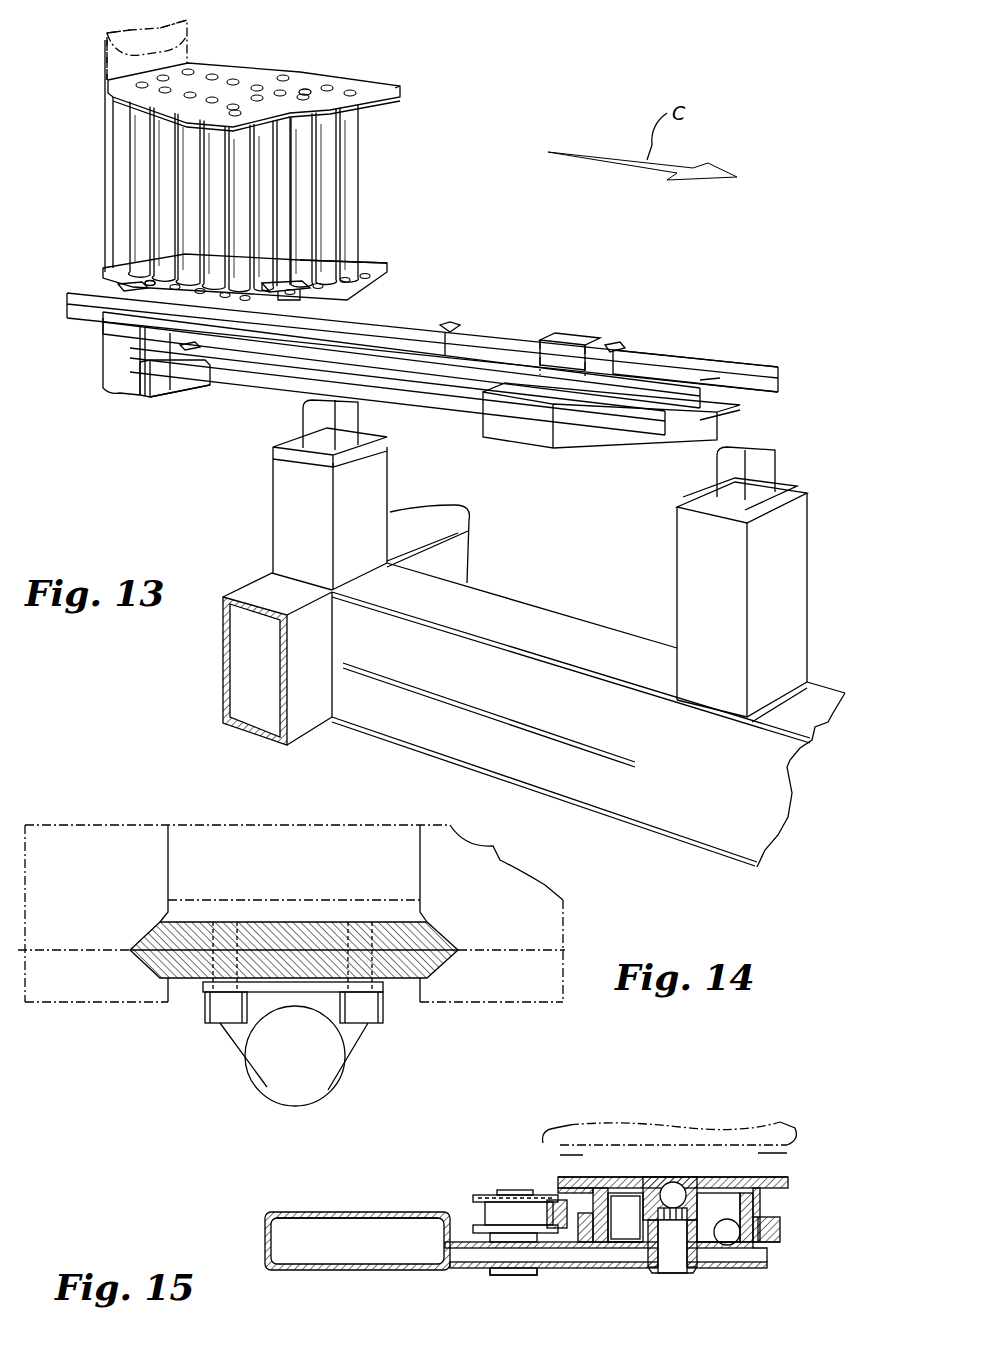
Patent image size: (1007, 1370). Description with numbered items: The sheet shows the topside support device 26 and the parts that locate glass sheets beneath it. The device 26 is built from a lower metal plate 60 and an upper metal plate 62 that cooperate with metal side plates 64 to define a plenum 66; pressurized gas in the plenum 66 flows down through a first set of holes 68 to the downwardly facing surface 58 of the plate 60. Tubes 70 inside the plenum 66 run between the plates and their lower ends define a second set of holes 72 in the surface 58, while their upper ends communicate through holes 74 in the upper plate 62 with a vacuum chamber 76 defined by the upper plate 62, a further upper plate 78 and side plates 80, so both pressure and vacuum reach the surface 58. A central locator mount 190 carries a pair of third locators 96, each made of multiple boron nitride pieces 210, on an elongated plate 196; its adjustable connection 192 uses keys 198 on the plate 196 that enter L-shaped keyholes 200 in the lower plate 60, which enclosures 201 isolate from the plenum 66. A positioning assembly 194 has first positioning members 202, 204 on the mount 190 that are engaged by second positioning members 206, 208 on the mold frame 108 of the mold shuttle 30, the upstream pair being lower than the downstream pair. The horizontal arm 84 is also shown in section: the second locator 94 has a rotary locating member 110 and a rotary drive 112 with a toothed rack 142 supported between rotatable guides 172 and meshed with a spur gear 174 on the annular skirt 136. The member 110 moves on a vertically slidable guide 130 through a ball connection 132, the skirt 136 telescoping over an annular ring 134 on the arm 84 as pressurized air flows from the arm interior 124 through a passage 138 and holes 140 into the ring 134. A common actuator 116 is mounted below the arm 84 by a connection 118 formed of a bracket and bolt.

In FIG. 13, the topside support device 26 is at (412, 90).
In FIG. 15, the topside support device 26 is at (782, 1120).
In FIG. 13, the mold shuttle 30 is at (227, 717).
In FIG. 13, the downwardly facing surface 58 is at (120, 290).
In FIG. 15, the downwardly facing surface 58 is at (800, 1147).
In FIG. 13, the lower metal plate 60 is at (390, 273).
In FIG. 13, the upper metal plate 62 is at (400, 95).
In FIG. 13, the metal side plates 64 is at (105, 118).
In FIG. 13, the plenum 66 is at (117, 152).
In FIG. 13, the first set of holes 68 is at (163, 275).
In FIG. 13, the tubes 70 is at (305, 152).
In FIG. 13, the second set of holes 72 is at (290, 270).
In FIG. 13, the holes 74 is at (290, 100).
In FIG. 13, the vacuum chamber 76 is at (118, 57).
In FIG. 13, the further upper plate 78 is at (205, 25).
In FIG. 13, the side plates 80 is at (105, 55).
In FIG. 14, the horizontal arm 84 is at (390, 992).
In FIG. 15, the horizontal arm 84 is at (267, 1228).
In FIG. 15, the second locator 94 is at (620, 1170).
In FIG. 13, the third locator 96 is at (543, 313).
In FIG. 13, the mold frame 108 is at (367, 712).
In FIG. 15, the rotary locating member 110 is at (767, 1200).
In FIG. 15, the rotary drive 112 is at (553, 1187).
In FIG. 14, the actuator 116 is at (260, 1075).
In FIG. 14, the connection 118 is at (215, 1010).
In FIG. 15, the arm interior 124 is at (328, 1230).
In FIG. 15, the vertically slidable guide 130 is at (647, 1257).
In FIG. 15, the ball connection 132 is at (673, 1195).
In FIG. 15, the annular ring 134 is at (713, 1232).
In FIG. 15, the annular skirt 136 is at (780, 1227).
In FIG. 15, the passage 138 is at (547, 1257).
In FIG. 15, the holes 140 is at (627, 1250).
In FIG. 15, the toothed rack 142 is at (563, 1183).
In FIG. 15, the rotatable guides 172 is at (483, 1217).
In FIG. 15, the spur gear 174 is at (582, 1217).
In FIG. 13, the central locator mount 190 is at (363, 307).
In FIG. 13, the adjustable connection 192 is at (527, 357).
In FIG. 13, the positioning assembly 194 is at (183, 400).
In FIG. 13, the elongated plate 196 is at (703, 377).
In FIG. 13, the keys 198 is at (558, 343).
In FIG. 13, the L-shaped keyholes 200 is at (262, 285).
In FIG. 13, the enclosures 201 is at (268, 272).
In FIG. 13, the first positioning member 202 is at (173, 387).
In FIG. 13, the first positioning member 204 is at (567, 440).
In FIG. 13, the second positioning member 206 is at (330, 430).
In FIG. 13, the second positioning member 208 is at (773, 467).
In FIG. 13, the locator pieces 210 is at (183, 348).